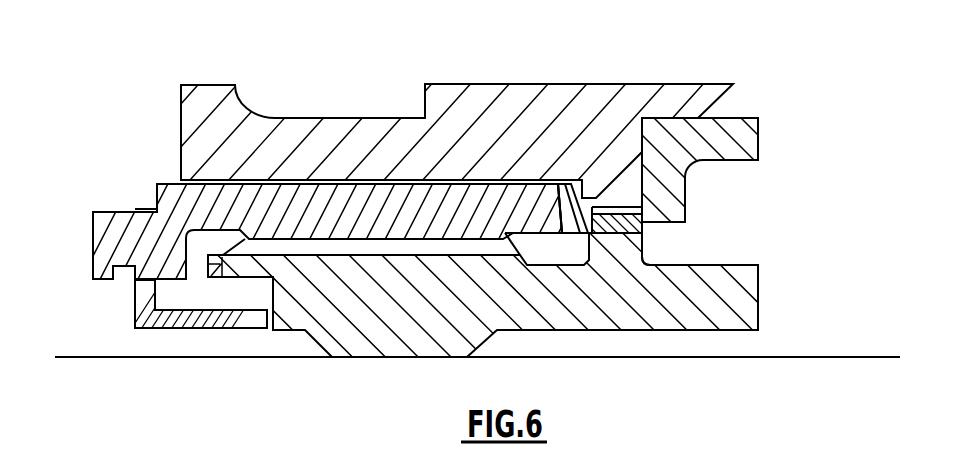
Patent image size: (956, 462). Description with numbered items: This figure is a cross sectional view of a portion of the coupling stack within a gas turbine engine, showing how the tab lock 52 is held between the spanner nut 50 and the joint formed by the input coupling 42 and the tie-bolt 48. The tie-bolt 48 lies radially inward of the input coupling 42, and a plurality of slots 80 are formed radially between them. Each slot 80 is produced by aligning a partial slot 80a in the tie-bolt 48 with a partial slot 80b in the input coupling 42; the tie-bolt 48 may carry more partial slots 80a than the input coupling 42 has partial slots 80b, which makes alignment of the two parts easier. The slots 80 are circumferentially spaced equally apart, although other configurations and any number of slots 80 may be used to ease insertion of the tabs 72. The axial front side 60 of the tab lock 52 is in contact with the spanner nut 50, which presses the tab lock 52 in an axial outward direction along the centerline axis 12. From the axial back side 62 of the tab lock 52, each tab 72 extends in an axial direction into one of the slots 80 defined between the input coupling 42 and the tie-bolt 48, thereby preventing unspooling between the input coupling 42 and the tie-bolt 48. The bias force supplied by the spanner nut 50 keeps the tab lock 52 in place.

The centerline axis 12 is at (598, 357).
The input coupling 42 is at (443, 121).
The tie-bolt 48 is at (745, 289).
The spanner nut 50 is at (195, 217).
The tab lock 52 is at (560, 243).
The axial front side 60 is at (552, 205).
The axial back side 62 is at (592, 182).
The tabs 72 is at (575, 183).
The slots 80 is at (652, 244).
The partial slots of the tie-bolt 80a is at (628, 240).
The partial slots of the input coupling 80b is at (633, 206).